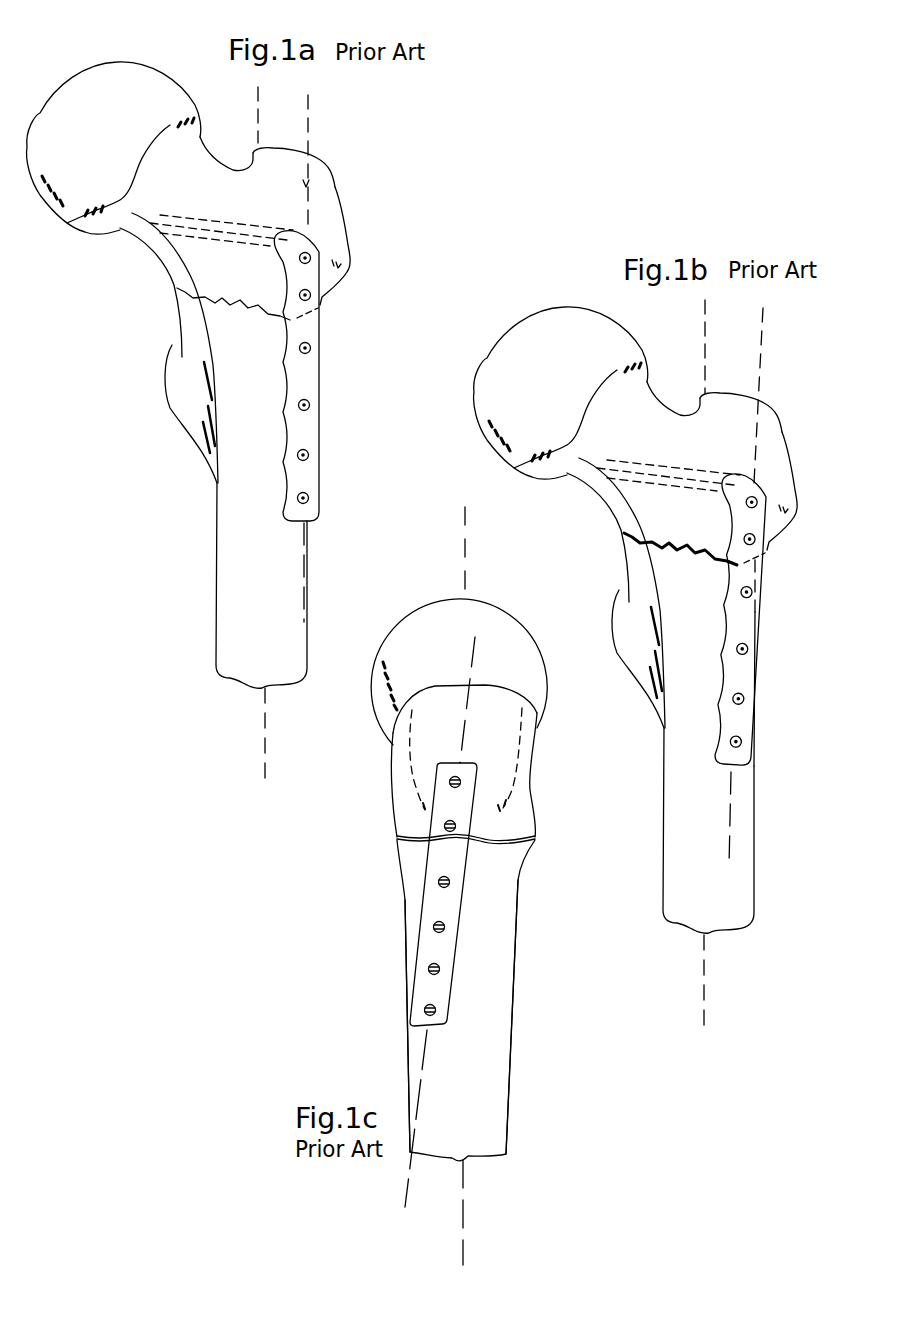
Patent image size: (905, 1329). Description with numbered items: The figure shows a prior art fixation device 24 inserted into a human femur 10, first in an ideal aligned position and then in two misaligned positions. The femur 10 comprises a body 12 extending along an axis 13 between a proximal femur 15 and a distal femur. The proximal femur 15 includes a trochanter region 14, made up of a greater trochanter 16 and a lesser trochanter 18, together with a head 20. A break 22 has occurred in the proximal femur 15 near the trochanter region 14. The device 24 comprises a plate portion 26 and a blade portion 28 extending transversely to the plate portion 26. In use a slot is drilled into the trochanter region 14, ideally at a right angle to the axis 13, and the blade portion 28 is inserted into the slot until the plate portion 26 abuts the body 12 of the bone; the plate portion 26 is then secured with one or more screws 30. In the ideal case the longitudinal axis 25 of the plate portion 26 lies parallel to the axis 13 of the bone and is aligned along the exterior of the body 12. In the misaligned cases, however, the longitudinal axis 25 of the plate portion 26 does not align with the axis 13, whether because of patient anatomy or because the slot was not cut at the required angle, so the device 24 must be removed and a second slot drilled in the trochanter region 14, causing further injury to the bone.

In FIG. 1A, the femur 10 is at (248, 553).
In FIG. 1B, the femur 10 is at (682, 867).
In FIG. 1C, the femur 10 is at (482, 1037).
In FIG. 1A, the body 12 is at (247, 505).
In FIG. 1B, the body 12 is at (673, 803).
In FIG. 1C, the body 12 is at (477, 1090).
In FIG. 1A, the axis 13 is at (266, 762).
In FIG. 1B, the axis 13 is at (705, 1027).
In FIG. 1C, the axis 13 is at (465, 1207).
In FIG. 1A, the trochanter region 14 is at (170, 297).
In FIG. 1B, the trochanter region 14 is at (615, 533).
In FIG. 1C, the trochanter region 14 is at (378, 793).
In FIG. 1A, the proximal femur 15 is at (325, 158).
In FIG. 1B, the proximal femur 15 is at (778, 400).
In FIG. 1C, the proximal femur 15 is at (552, 722).
In FIG. 1A, the greater trochanter 16 is at (328, 207).
In FIG. 1B, the greater trochanter 16 is at (773, 470).
In FIG. 1A, the lesser trochanter 18 is at (177, 383).
In FIG. 1B, the lesser trochanter 18 is at (622, 635).
In FIG. 1A, the head 20 is at (118, 75).
In FIG. 1B, the head 20 is at (560, 323).
In FIG. 1C, the head 20 is at (493, 634).
In FIG. 1A, the break 22 is at (230, 315).
In FIG. 1B, the break 22 is at (678, 548).
In FIG. 1C, the break 22 is at (502, 846).
In FIG. 1A, the prior art device 24 is at (308, 378).
In FIG. 1B, the prior art device 24 is at (745, 624).
In FIG. 1C, the prior art device 24 is at (433, 903).
In FIG. 1A, the longitudinal axis 25 is at (309, 100).
In FIG. 1B, the longitudinal axis 25 is at (763, 308).
In FIG. 1C, the longitudinal axis 25 is at (403, 1195).
In FIG. 1A, the plate portion 26 is at (303, 432).
In FIG. 1B, the plate portion 26 is at (738, 717).
In FIG. 1C, the plate portion 26 is at (438, 950).
In FIG. 1A, the blade portion 28 is at (223, 225).
In FIG. 1B, the blade portion 28 is at (683, 468).
In FIG. 1A, the screws 30 is at (307, 498).
In FIG. 1B, the screws 30 is at (740, 700).